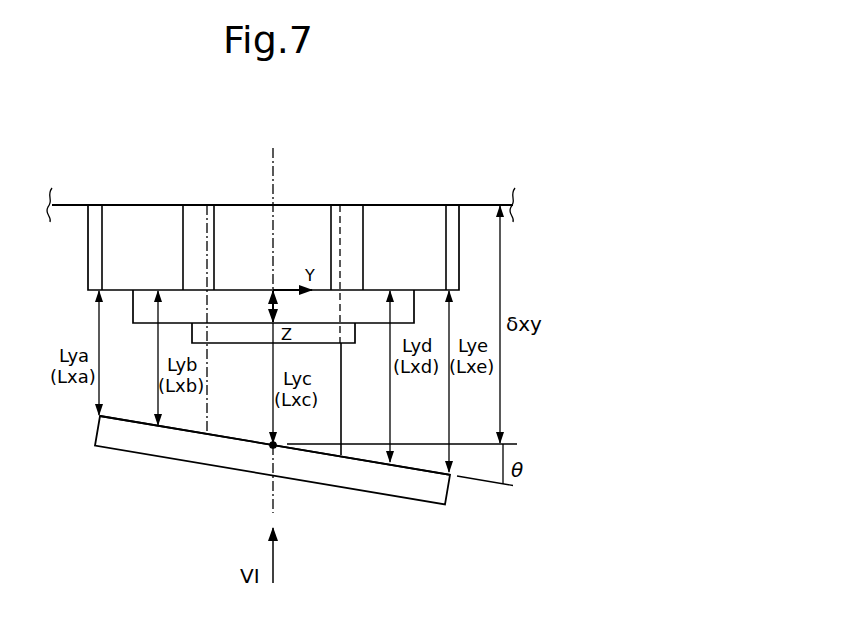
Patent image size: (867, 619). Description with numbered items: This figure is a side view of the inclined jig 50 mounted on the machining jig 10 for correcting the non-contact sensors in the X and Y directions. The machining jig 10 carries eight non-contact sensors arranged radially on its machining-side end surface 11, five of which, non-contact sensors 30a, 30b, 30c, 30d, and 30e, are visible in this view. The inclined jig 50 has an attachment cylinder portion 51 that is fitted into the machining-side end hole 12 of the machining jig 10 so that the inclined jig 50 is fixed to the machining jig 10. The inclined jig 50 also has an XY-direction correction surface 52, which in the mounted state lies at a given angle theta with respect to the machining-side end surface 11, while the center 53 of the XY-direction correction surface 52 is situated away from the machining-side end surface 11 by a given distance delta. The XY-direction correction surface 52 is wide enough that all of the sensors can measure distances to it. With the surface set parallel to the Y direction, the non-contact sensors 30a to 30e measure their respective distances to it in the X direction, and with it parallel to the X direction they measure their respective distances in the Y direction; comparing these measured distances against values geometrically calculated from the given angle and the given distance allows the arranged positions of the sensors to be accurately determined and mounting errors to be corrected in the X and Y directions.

The machining jig 10 is at (495, 171).
The machining-side end surface 11 is at (482, 206).
The machining-side end hole 12 is at (342, 247).
The non-contact sensor 30a is at (93, 213).
The non-contact sensor 30b is at (157, 222).
The non-contact sensor 30c is at (243, 222).
The non-contact sensor 30d is at (403, 225).
The non-contact sensor 30e is at (452, 225).
The inclined jig 50 is at (458, 499).
The attachment cylinder portion 51 is at (342, 408).
The XY-direction correction surface 52 is at (363, 458).
The center of the XY-direction correction surface 53 is at (271, 447).